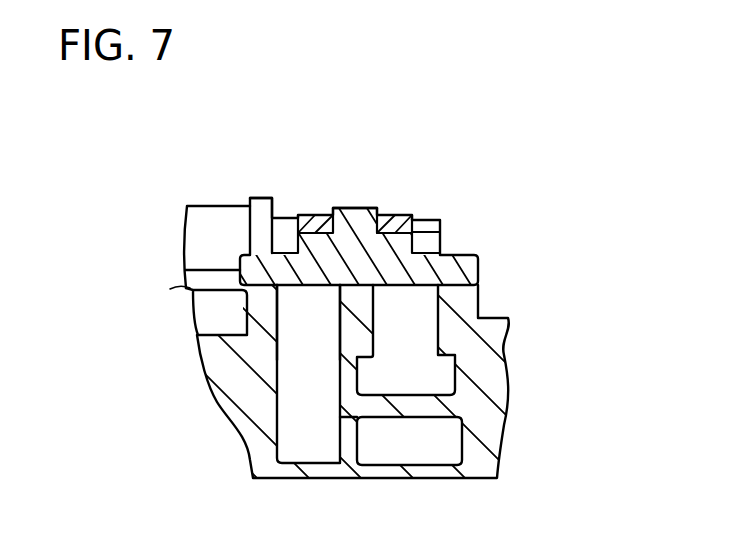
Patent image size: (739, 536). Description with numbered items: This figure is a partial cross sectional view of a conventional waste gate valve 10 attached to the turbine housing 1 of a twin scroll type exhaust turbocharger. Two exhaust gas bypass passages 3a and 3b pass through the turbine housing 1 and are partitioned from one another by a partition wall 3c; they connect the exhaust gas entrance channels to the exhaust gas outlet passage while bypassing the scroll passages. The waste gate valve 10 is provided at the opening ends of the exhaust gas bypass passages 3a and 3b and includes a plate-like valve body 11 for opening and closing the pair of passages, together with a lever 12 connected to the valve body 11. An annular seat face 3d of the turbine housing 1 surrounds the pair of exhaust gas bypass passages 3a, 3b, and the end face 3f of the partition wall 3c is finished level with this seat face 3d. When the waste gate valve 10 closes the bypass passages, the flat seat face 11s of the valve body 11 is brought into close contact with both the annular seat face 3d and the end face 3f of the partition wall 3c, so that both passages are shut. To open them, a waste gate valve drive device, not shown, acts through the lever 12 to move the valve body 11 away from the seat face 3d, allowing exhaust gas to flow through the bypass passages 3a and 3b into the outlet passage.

The turbine housing 1 is at (497, 348).
The exhaust gas bypass passage 3a is at (298, 382).
The exhaust gas bypass passage 3b is at (420, 313).
The partition wall 3c is at (354, 320).
The seat face 3d is at (271, 285).
The end face of partition wall 3f is at (355, 283).
The waste gate valve 10 is at (452, 209).
The valve body 11 is at (447, 272).
The seat face of valve body 11s is at (246, 293).
The lever 12 is at (312, 232).